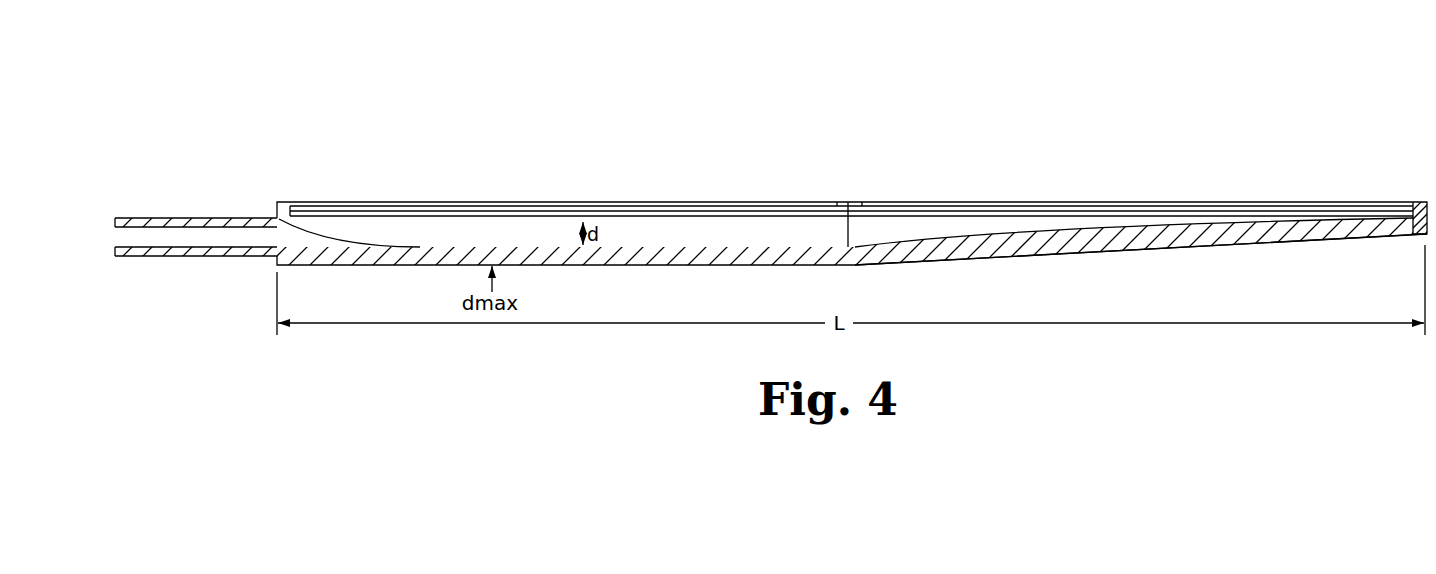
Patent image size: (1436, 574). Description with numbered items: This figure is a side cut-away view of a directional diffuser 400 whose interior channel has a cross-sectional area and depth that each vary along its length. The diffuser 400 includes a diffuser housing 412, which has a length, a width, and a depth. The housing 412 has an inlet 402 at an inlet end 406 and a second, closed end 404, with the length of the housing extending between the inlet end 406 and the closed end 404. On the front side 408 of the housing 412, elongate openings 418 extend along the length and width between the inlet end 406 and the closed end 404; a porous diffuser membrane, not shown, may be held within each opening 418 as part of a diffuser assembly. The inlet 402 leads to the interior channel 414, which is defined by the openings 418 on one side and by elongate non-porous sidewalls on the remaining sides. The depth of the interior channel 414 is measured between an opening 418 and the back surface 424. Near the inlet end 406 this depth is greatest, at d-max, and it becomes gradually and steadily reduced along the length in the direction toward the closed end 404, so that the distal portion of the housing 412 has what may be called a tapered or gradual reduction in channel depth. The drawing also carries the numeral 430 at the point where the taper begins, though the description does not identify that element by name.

The directional diffuser 400 is at (355, 130).
The inlet 402 is at (114, 251).
The closed end 404 is at (1402, 250).
The inlet end 406 is at (230, 278).
The front side 408 is at (852, 203).
The diffuser housing 412 is at (1410, 204).
The interior channel 414 is at (427, 225).
The openings 418 is at (676, 212).
The back surface 424 is at (495, 234).
The tapered wall 430 is at (857, 268).